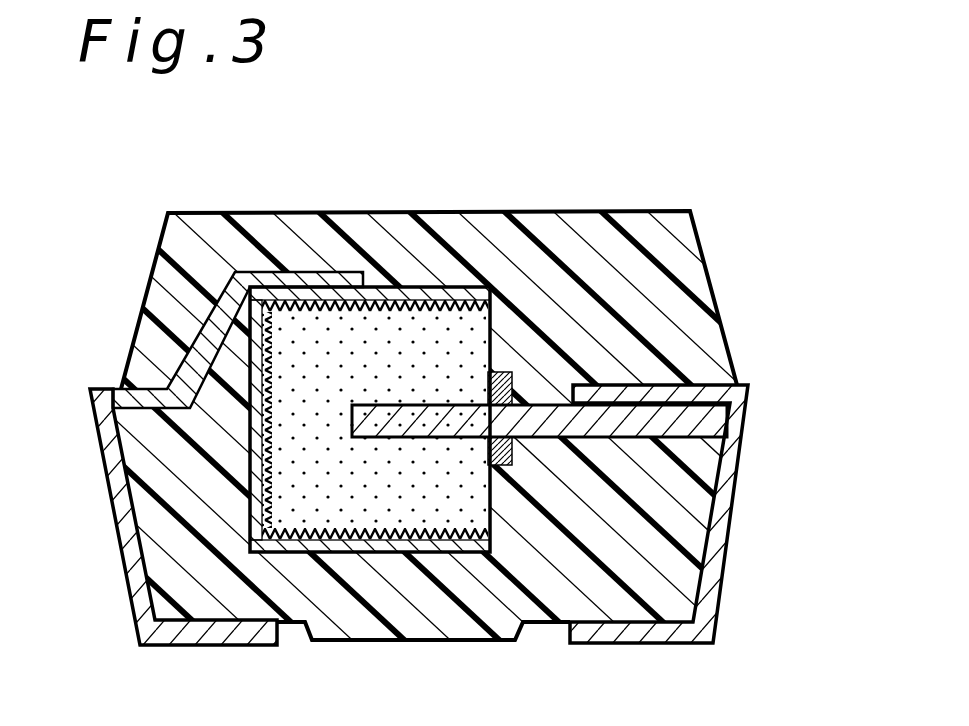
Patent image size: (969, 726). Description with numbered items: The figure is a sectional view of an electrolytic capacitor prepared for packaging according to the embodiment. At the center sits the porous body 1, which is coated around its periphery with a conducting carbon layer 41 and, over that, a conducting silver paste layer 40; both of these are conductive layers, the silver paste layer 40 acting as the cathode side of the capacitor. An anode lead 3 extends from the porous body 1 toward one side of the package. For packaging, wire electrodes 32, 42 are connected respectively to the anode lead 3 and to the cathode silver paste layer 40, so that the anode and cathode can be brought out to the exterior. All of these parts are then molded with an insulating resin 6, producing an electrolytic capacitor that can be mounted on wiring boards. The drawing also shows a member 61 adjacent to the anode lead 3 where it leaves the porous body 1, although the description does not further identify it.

The porous body 1 is at (452, 327).
The anode lead 3 is at (610, 427).
The resin package body 6 is at (663, 302).
The wire electrode 32 is at (608, 630).
The conducting silver paste layer 40 is at (398, 283).
The conducting carbon layer 41 is at (435, 300).
The wire electrode 42 is at (170, 633).
The insulating spacer 61 is at (497, 468).